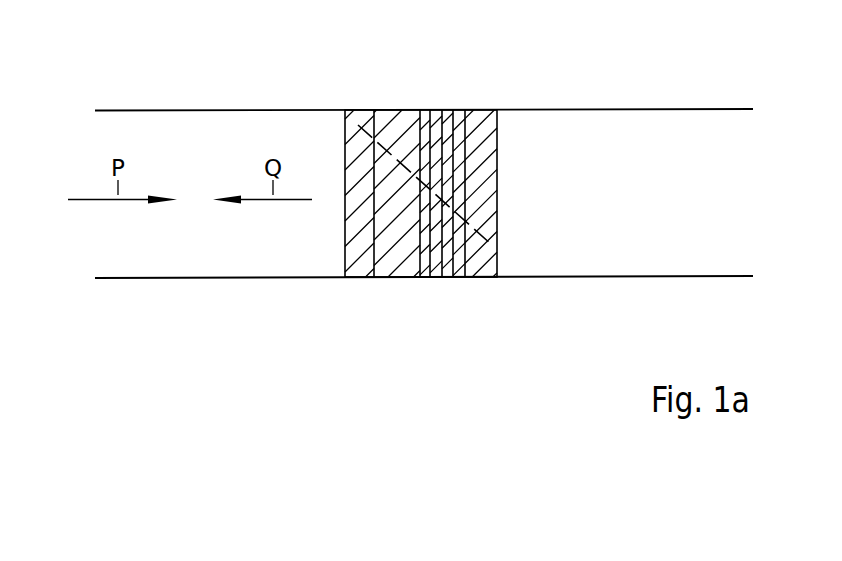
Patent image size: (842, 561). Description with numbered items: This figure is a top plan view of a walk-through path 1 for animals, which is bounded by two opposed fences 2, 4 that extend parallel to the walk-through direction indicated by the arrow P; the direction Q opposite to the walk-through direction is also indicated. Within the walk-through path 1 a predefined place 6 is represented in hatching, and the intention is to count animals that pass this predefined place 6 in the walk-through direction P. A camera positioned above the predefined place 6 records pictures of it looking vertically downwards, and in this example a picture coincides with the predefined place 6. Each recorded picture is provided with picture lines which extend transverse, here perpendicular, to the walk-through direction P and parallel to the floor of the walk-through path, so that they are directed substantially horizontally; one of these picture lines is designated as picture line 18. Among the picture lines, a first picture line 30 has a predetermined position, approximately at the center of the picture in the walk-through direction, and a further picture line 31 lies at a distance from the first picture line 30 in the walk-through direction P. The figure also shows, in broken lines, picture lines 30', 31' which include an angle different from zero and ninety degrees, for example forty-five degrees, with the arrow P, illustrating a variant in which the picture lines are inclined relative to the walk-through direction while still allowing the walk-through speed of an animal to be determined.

The walk-through path 1 is at (424, 193).
The fence 2 is at (200, 278).
The fence 4 is at (200, 110).
The predefined place 6 is at (480, 120).
The picture line 18 is at (383, 147).
The first picture line 30 is at (415, 166).
The picture line 30' is at (522, 193).
The picture line 31 is at (445, 220).
The picture line 31' is at (362, 166).